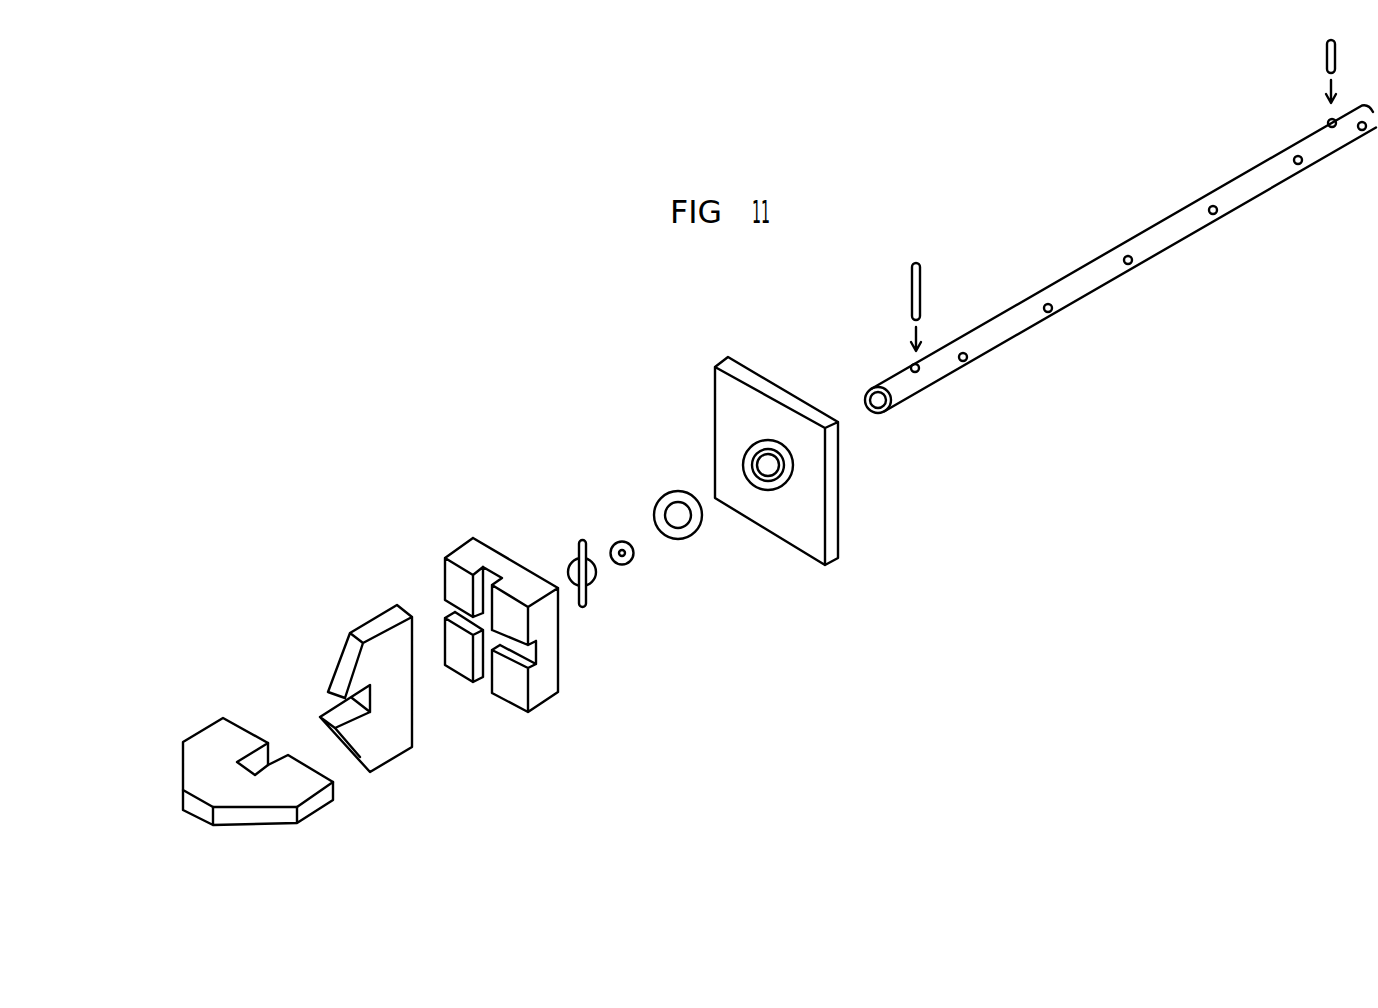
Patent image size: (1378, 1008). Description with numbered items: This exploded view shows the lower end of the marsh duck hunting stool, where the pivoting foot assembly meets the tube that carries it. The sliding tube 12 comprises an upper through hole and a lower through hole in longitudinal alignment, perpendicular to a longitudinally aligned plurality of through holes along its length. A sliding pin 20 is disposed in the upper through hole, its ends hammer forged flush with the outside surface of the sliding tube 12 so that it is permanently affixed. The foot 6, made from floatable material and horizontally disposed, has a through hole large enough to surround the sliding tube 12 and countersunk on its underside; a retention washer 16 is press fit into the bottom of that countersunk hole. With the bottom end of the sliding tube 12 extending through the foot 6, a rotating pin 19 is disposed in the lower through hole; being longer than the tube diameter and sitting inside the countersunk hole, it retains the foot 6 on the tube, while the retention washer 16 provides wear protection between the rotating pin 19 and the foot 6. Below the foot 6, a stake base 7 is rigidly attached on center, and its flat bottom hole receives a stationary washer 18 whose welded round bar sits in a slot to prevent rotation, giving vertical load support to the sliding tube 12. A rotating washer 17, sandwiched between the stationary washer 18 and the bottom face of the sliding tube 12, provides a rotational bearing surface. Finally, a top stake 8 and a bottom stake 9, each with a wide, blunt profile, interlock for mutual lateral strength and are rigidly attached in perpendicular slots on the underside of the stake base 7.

The foot 6 is at (713, 425).
The stake base 7 is at (563, 667).
The top stake 8 is at (310, 820).
The bottom stake 9 is at (382, 763).
The sliding tube 12 is at (1080, 297).
The retention washer 16 is at (700, 533).
The rotating washer 17 is at (632, 561).
The stationary washer 18 is at (573, 562).
The rotating pin 19 is at (918, 300).
The sliding pin 20 is at (1323, 62).